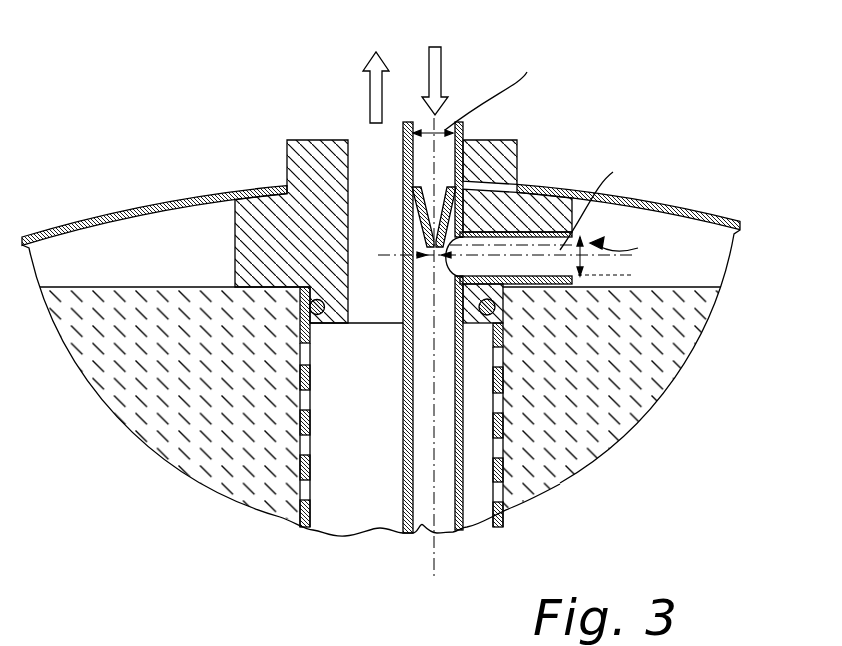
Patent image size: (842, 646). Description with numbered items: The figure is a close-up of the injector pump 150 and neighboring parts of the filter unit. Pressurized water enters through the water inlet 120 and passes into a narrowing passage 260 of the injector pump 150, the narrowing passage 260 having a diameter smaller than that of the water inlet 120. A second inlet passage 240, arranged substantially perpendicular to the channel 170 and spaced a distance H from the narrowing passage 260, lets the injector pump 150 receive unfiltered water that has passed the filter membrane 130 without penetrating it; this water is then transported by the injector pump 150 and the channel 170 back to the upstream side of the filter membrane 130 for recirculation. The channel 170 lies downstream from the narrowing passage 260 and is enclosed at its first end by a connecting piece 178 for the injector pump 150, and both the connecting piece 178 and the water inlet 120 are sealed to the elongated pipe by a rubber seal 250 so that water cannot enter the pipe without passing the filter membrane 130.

The water inlet 120 is at (411, 118).
The filter membrane 130 is at (683, 343).
The injector pump 150 is at (465, 231).
The channel 170 is at (423, 515).
The connecting piece 178 is at (277, 215).
The second inlet passage 240 is at (657, 203).
The rubber seal 250 is at (297, 307).
The narrowing passage 260 is at (447, 223).